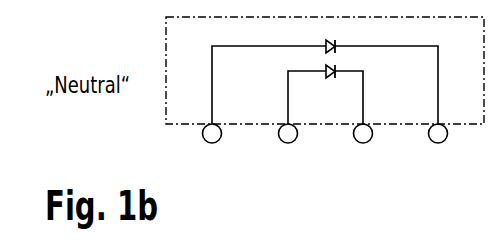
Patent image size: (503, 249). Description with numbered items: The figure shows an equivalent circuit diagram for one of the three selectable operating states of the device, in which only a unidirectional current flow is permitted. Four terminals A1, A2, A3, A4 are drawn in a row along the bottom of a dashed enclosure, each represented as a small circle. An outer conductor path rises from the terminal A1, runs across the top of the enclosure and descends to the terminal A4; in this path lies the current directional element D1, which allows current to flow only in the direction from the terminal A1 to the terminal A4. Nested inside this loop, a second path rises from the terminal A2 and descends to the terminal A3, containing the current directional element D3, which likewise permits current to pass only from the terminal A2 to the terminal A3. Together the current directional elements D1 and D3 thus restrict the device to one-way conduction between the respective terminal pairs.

The current directional element D1 is at (346, 35).
The current directional element D3 is at (325, 87).
The terminal A1 is at (210, 152).
The terminal A2 is at (288, 152).
The terminal A3 is at (367, 152).
The terminal A4 is at (436, 152).